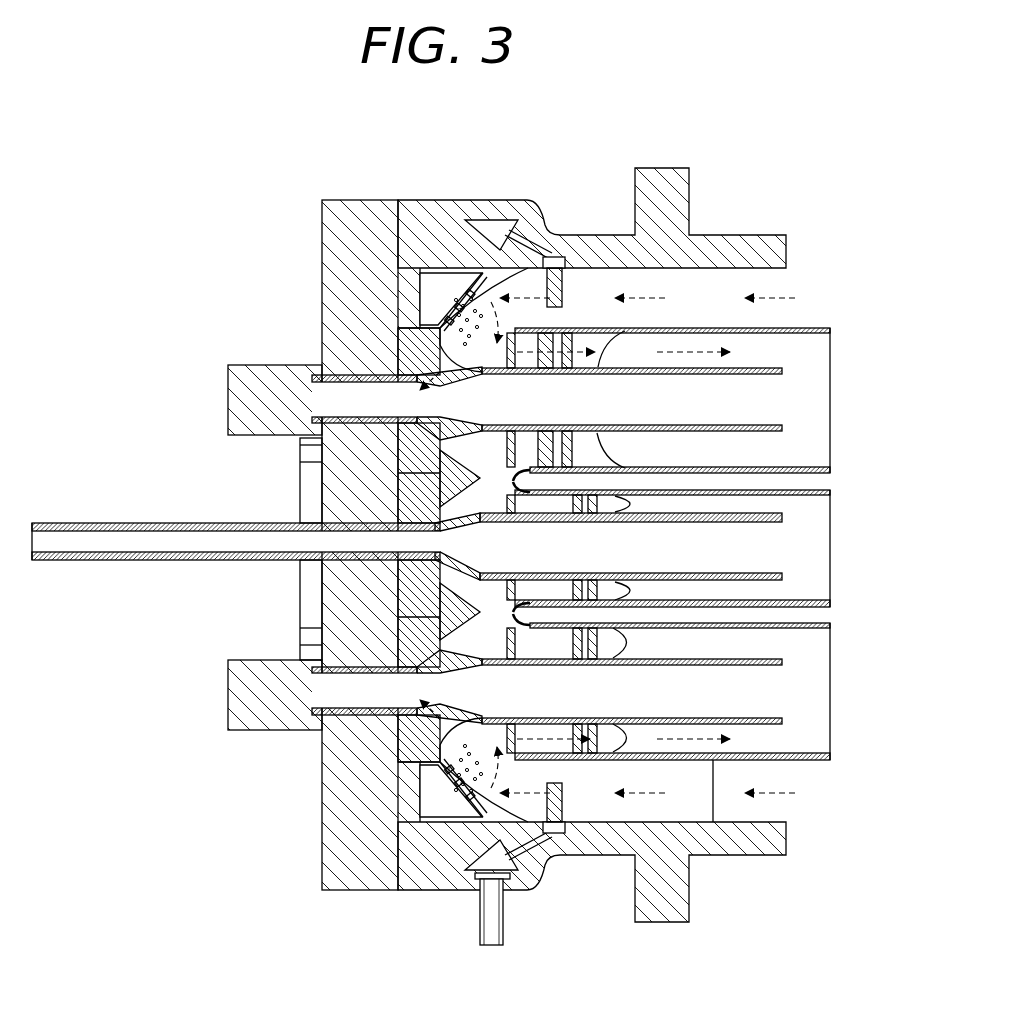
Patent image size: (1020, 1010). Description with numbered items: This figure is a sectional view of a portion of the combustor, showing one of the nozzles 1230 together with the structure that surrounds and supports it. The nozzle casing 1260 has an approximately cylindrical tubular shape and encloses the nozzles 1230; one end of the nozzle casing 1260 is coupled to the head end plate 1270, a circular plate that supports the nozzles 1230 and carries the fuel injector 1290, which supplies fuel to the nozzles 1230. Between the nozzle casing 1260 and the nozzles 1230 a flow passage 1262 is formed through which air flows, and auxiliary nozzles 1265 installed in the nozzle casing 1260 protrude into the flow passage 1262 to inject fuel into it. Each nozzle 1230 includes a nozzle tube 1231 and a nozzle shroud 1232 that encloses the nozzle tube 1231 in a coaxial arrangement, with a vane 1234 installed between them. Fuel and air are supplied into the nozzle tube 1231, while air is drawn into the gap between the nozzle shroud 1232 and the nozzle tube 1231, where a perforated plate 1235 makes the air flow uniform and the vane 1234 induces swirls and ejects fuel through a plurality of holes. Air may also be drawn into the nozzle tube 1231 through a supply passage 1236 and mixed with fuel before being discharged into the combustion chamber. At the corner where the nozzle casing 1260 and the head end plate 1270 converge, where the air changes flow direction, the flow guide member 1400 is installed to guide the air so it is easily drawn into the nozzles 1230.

The nozzle 1230 is at (693, 480).
The nozzle tube 1231 is at (736, 432).
The nozzle shroud 1232 is at (794, 322).
The vane 1234 is at (595, 350).
The perforated plate 1235 is at (536, 330).
The supply passage 1236 is at (519, 828).
The nozzle casing 1260 is at (740, 838).
The flow passage 1262 is at (697, 302).
The auxiliary nozzle 1265 is at (564, 800).
The head end plate 1270 is at (360, 873).
The fuel injector 1290 is at (105, 523).
The flow guide member 1400 is at (588, 256).